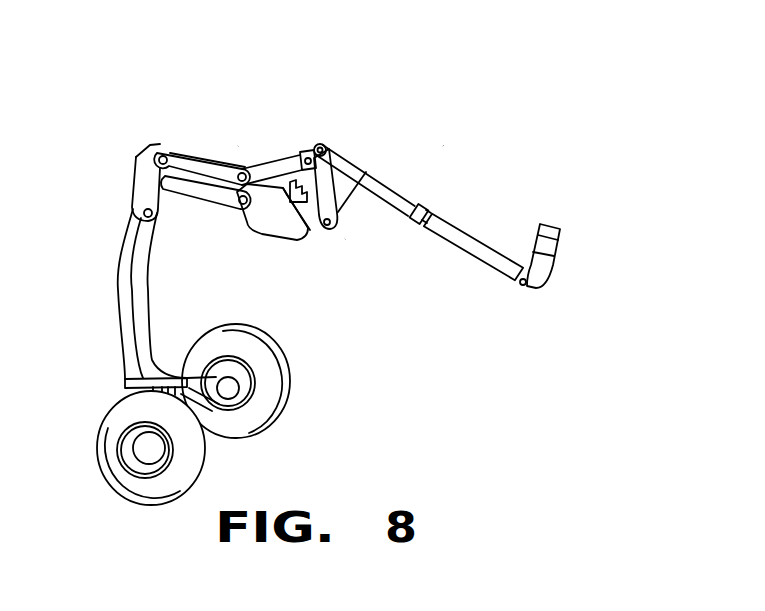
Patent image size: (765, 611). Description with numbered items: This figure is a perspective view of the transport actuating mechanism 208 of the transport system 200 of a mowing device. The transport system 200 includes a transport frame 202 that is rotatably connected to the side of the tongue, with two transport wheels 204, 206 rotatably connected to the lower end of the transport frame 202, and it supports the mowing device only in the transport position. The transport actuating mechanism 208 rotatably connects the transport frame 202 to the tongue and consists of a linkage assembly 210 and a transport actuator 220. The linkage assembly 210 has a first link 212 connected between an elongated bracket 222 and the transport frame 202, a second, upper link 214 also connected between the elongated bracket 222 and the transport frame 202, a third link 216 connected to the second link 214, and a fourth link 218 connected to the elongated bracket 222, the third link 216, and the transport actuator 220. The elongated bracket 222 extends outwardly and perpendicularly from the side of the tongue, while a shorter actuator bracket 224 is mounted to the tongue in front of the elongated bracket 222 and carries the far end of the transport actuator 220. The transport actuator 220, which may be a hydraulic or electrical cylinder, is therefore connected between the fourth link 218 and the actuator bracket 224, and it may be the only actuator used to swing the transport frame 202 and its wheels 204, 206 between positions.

The transport system 200 is at (443, 146).
The transport frame 202 is at (125, 305).
The transport wheel 204 is at (276, 390).
The transport wheel 206 is at (142, 492).
The transport actuating mechanism 208 is at (345, 239).
The linkage assembly 210 is at (238, 146).
The first link 212 is at (208, 192).
The second, upper link 214 is at (197, 160).
The third link 216 is at (280, 158).
The fourth link 218 is at (324, 180).
The transport actuator 220 is at (467, 240).
The elongated bracket 222 is at (283, 233).
The actuator bracket 224 is at (555, 250).